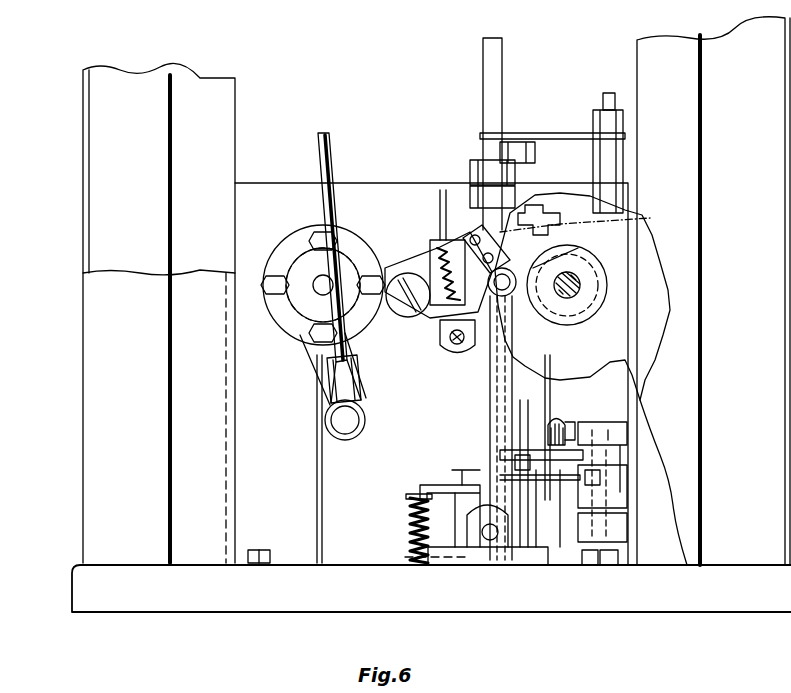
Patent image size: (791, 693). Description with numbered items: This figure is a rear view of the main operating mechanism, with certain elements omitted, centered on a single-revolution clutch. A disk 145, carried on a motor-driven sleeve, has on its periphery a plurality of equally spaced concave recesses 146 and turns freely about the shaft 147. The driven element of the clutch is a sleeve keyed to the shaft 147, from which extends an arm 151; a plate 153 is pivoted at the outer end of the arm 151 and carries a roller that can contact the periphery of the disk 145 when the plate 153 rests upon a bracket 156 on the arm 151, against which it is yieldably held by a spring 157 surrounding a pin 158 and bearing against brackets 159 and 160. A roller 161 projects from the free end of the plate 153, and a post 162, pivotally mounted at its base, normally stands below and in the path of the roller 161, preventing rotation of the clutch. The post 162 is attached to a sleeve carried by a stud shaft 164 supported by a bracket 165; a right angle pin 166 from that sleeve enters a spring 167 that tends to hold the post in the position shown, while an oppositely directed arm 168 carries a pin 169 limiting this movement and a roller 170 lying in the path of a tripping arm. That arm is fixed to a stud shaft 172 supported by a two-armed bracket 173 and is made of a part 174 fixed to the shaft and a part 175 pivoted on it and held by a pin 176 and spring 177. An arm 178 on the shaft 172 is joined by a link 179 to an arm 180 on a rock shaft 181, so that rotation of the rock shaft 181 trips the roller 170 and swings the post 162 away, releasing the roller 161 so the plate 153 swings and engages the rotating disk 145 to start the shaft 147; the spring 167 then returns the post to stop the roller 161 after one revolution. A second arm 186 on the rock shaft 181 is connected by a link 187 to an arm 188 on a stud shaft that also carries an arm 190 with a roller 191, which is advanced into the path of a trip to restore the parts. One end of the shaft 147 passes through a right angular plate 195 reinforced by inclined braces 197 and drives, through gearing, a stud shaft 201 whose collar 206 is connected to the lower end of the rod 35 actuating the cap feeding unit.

The rod 35 is at (318, 140).
The disk 145 is at (567, 298).
The concave recesses 146 is at (650, 332).
The shaft 147 is at (580, 277).
The arm 151 is at (430, 320).
The plate 153 is at (440, 258).
The bracket 156 is at (442, 350).
The spring 157 is at (412, 318).
The pin 158 is at (440, 190).
The bracket 159 is at (447, 245).
The bracket 160 is at (492, 360).
The roller 161 is at (571, 247).
The post 162 is at (545, 400).
The stud shaft 164 is at (490, 565).
The bracket 165 is at (468, 553).
The right angle pin 166 is at (420, 486).
The spring 167 is at (408, 525).
The arm 168 is at (452, 470).
The pin 169 is at (515, 565).
The roller 170 is at (500, 450).
The stud shaft 172 is at (627, 445).
The two-armed bracket 173 is at (627, 485).
The part of arm 174 is at (560, 548).
The part of arm 175 is at (515, 460).
The pin 176 is at (565, 428).
The spring 177 is at (530, 420).
The arm 178 is at (627, 522).
The link 179 is at (536, 548).
The arm 180 is at (450, 516).
The rock shaft 181 is at (502, 50).
The second arm 186 is at (470, 160).
The link 187 is at (505, 142).
The arm 188 is at (540, 133).
The arm 190 is at (593, 176).
The roller 191 is at (593, 160).
The right angular plate 195 is at (301, 381).
The inclined braces 197 is at (316, 485).
The stud shaft 201 is at (300, 262).
The collar 206 is at (310, 350).